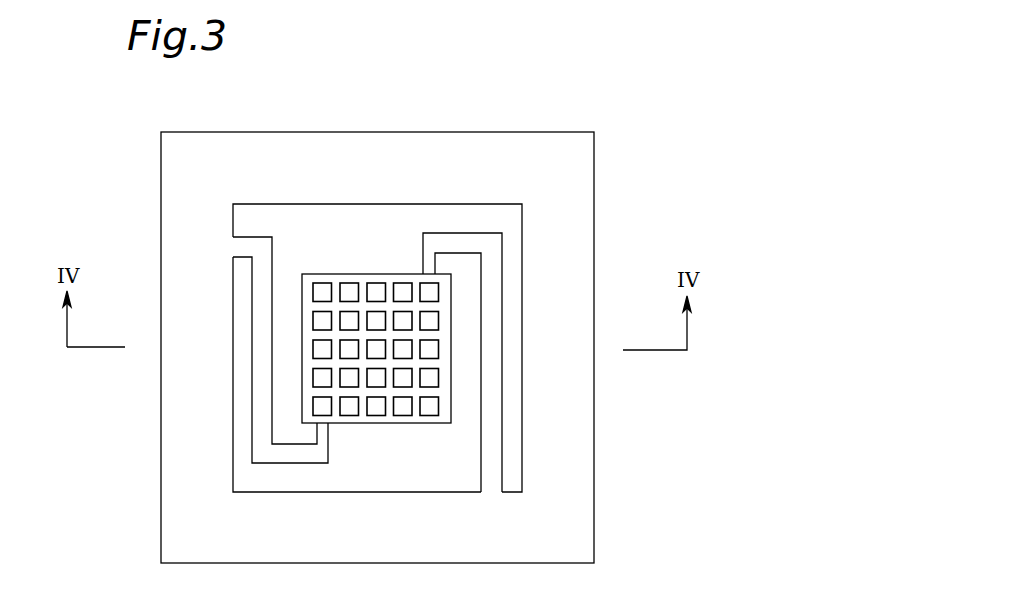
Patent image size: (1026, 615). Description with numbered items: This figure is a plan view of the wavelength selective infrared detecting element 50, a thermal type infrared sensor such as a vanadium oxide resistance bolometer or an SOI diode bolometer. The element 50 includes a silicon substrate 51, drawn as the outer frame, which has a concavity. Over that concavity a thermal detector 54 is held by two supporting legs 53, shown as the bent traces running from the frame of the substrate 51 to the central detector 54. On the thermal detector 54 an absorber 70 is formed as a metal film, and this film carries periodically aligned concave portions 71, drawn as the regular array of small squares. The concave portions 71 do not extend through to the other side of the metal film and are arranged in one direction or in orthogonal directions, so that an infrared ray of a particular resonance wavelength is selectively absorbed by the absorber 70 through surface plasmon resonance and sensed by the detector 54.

The wavelength selective infrared detecting element 50 is at (637, 120).
The substrate 51 is at (577, 507).
The supporting legs 53 is at (252, 412).
The thermal detector 54 is at (387, 268).
The absorber 70 is at (371, 253).
The concave portions 71 is at (322, 286).